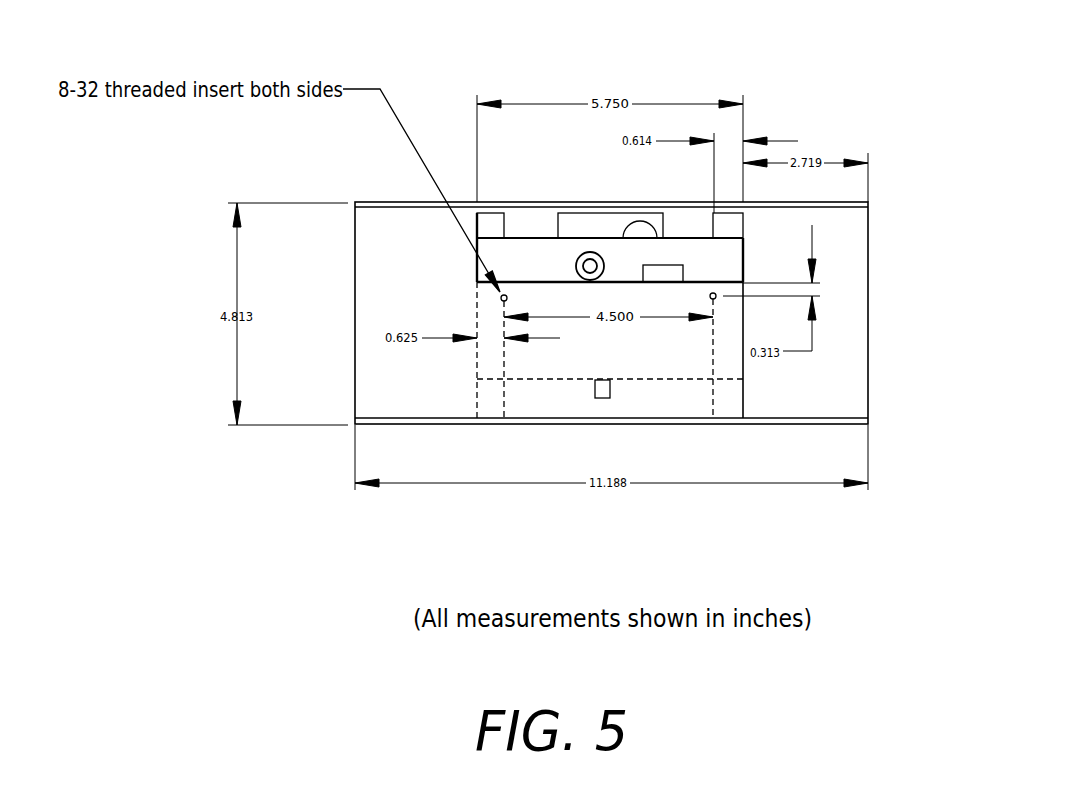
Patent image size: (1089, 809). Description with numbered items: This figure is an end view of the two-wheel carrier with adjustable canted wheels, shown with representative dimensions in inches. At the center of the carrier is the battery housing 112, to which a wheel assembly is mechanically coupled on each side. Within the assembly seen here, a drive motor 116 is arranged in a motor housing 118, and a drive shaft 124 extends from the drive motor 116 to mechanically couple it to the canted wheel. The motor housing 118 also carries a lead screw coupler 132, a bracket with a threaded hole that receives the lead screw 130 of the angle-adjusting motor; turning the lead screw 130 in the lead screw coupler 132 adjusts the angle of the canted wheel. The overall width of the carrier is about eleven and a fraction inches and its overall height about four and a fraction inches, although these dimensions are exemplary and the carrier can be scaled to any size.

The battery housing 112 is at (868, 262).
The drive motor 116 is at (677, 375).
The motor housing 118 is at (423, 513).
The drive shaft 124 is at (593, 388).
The lead screw 130 is at (588, 252).
The lead screw coupler 132 is at (533, 238).